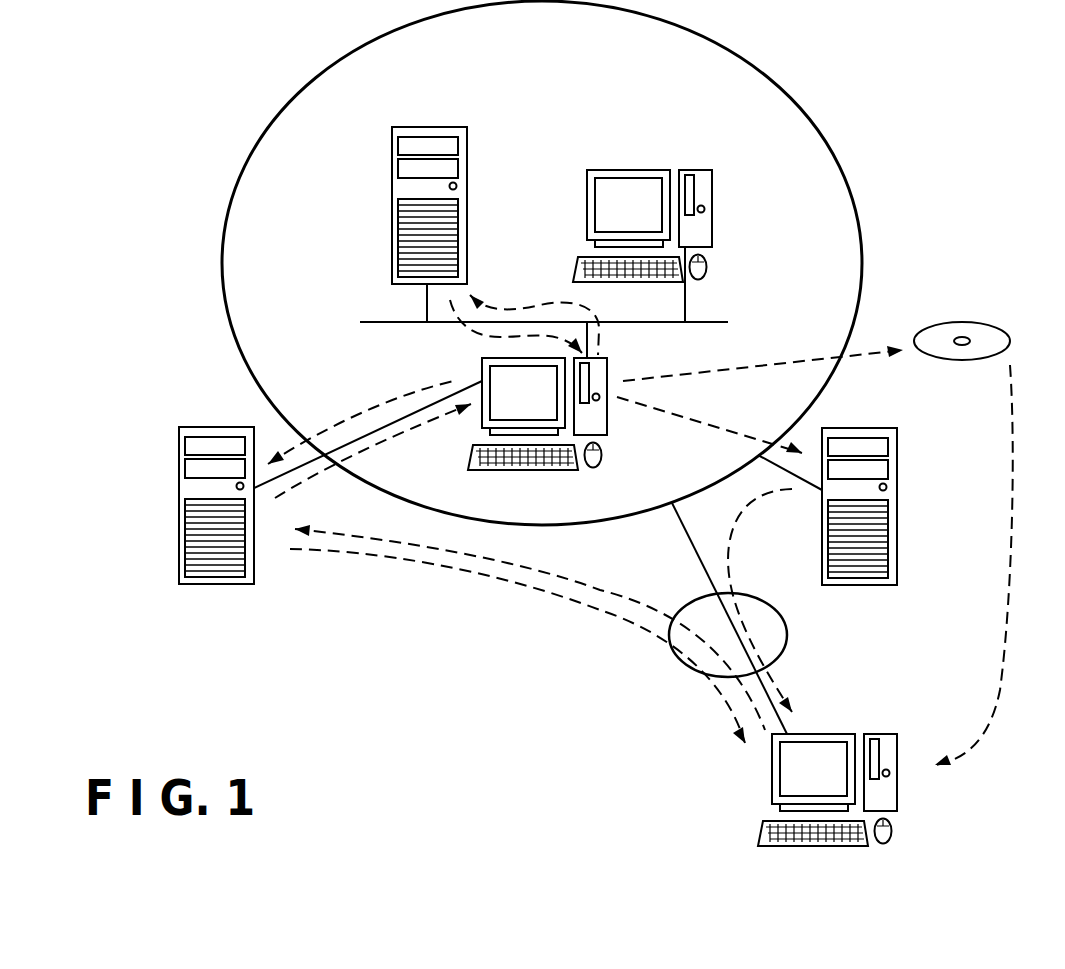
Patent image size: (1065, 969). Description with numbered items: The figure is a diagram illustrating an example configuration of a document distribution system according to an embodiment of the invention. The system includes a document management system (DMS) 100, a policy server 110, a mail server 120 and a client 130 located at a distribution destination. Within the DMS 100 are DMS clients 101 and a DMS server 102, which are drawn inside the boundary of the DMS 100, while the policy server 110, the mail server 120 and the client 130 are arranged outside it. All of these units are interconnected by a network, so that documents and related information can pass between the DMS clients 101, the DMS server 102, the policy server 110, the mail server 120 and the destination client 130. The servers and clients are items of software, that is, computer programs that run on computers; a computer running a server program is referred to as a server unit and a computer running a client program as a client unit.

The document management system (DMS) 100 is at (815, 117).
The DMS client 101 is at (712, 200).
The DMS server 102 is at (392, 186).
The policy server 110 is at (178, 489).
The mail server 120 is at (897, 487).
The client at a distribution destination 130 is at (887, 734).